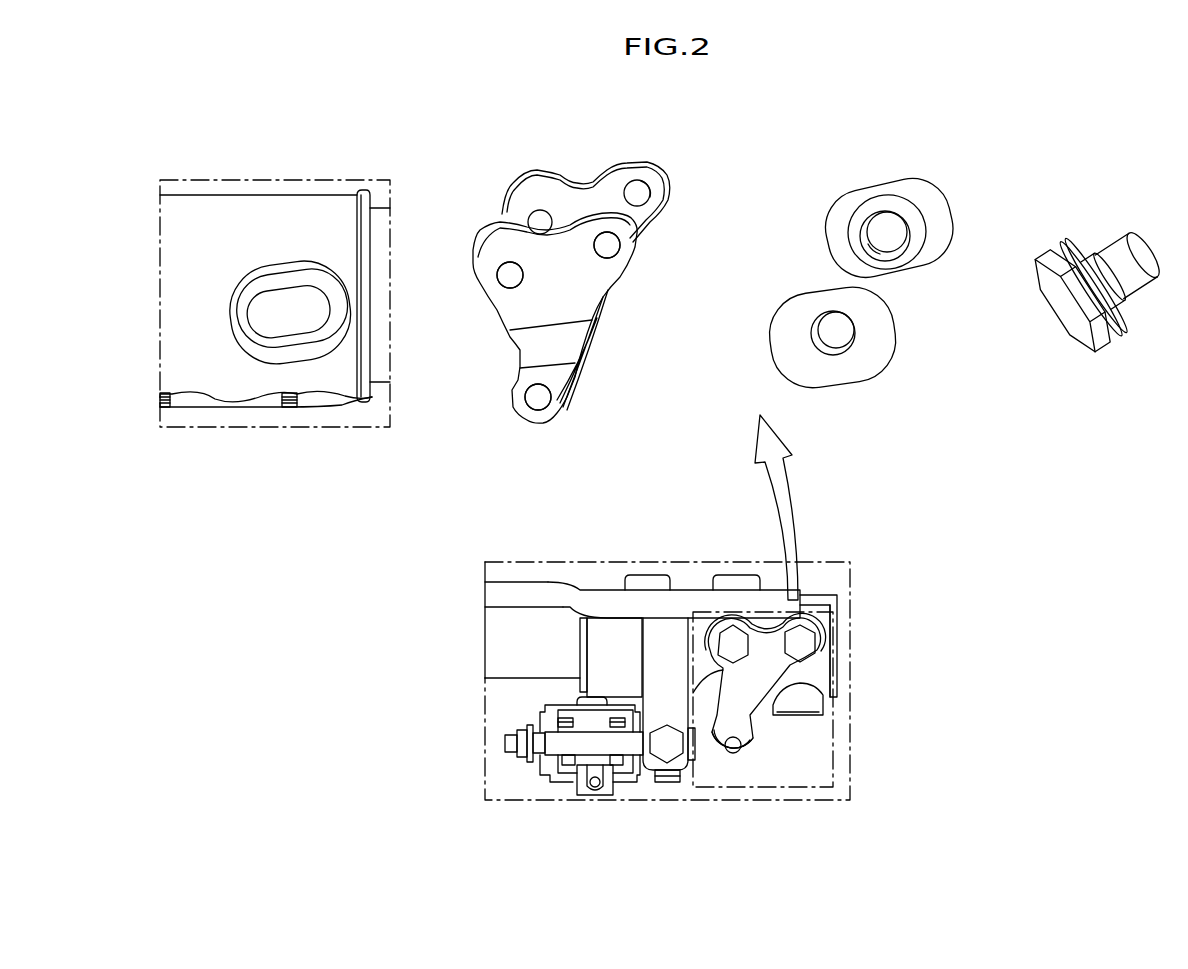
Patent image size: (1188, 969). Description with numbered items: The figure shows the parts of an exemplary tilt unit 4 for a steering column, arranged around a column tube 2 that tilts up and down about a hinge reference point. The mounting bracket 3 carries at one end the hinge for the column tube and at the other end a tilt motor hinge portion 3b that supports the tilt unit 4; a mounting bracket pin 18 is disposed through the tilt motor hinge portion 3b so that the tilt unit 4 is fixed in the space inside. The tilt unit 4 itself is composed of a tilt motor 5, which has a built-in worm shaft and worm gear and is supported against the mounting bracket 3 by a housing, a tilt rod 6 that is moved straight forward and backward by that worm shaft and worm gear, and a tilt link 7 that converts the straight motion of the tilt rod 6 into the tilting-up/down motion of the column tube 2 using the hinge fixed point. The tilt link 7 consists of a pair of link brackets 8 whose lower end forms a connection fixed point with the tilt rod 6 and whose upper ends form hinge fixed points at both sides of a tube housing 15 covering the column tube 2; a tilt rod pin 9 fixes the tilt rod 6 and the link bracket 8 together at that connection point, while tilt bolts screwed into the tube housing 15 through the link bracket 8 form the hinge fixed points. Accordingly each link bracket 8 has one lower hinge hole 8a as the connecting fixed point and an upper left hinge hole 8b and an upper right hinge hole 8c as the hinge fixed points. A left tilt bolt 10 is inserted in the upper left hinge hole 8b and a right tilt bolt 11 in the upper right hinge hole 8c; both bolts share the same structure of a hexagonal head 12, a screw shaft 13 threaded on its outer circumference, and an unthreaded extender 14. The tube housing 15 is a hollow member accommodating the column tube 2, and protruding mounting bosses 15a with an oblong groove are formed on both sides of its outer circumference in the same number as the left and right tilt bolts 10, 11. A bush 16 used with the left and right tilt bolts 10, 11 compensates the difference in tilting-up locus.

The column tube 2 is at (842, 635).
The mounting bracket 3 is at (733, 585).
The tilt motor hinge portion 3b is at (670, 640).
The tilt unit 4 is at (690, 812).
The tilt motor 5 is at (560, 780).
The tilt rod 6 is at (580, 748).
The tilt link 7 is at (762, 170).
The link bracket 8 is at (587, 192).
The lower hinge hole 8a is at (538, 397).
The upper left hinge hole 8b is at (510, 275).
The upper right hinge hole 8c is at (609, 243).
The tilt rod pin 9 is at (735, 748).
The left tilt bolt 10 is at (1152, 140).
The right tilt bolt 11 is at (807, 648).
The hexagonal head 12 is at (1050, 253).
The screw shaft 13 is at (1090, 257).
The extender 14 is at (1123, 240).
The tube housing 15 is at (218, 222).
The mounting boss 15a is at (298, 307).
The bush 16 is at (933, 245).
The mounting bracket pin 18 is at (657, 753).